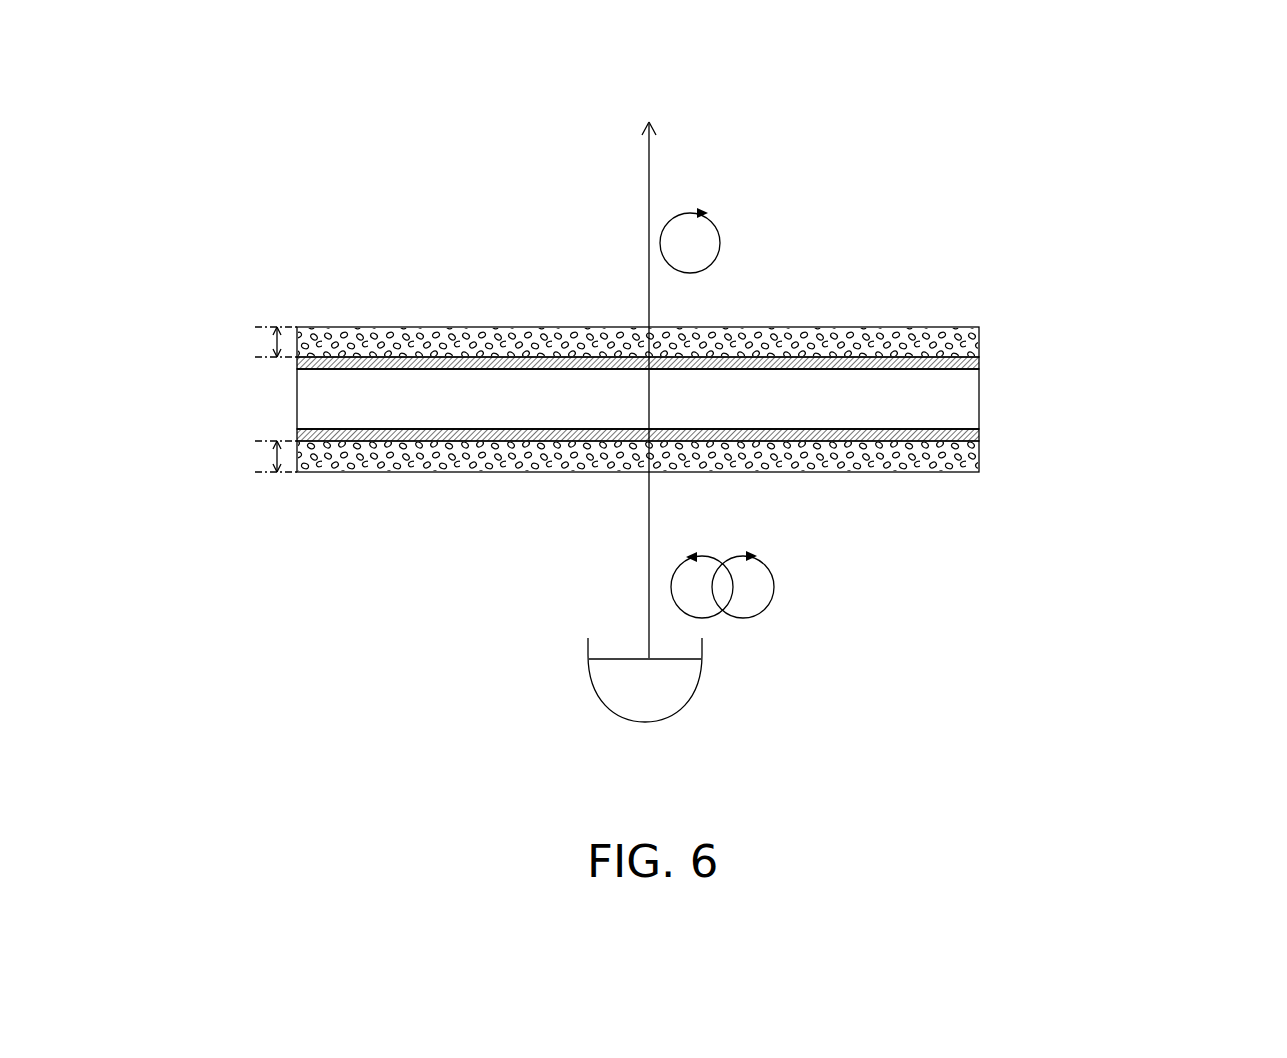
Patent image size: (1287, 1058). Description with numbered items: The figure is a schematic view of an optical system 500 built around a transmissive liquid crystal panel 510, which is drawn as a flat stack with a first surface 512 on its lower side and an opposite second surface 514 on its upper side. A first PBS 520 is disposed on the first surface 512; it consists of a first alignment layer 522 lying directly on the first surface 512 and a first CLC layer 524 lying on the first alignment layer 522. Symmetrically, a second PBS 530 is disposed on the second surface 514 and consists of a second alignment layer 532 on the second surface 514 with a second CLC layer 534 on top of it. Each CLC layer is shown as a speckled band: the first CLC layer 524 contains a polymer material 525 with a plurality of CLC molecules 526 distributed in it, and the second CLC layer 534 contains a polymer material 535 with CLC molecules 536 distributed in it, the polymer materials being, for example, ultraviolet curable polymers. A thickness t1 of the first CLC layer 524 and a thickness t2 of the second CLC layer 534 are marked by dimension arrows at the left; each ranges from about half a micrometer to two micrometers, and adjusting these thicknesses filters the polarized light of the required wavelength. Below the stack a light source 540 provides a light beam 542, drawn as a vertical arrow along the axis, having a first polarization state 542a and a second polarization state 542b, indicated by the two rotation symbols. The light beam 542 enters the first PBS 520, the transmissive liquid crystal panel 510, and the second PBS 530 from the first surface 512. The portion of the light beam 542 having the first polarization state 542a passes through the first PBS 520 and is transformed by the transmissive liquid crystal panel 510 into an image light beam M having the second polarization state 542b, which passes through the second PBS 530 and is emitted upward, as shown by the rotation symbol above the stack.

The optical system 500 is at (662, 454).
The transmissive liquid crystal panel 510 is at (960, 398).
The first surface 512 is at (320, 419).
The second surface 514 is at (368, 373).
The first PBS 520 is at (754, 492).
The first alignment layer 522 is at (970, 436).
The first CLC layer 524 is at (713, 498).
The polymer material 525 is at (975, 455).
The CLC molecules 526 is at (930, 462).
The second PBS 530 is at (754, 293).
The second alignment layer 532 is at (968, 365).
The second CLC layer 534 is at (713, 287).
The polymer material 535 is at (968, 350).
The CLC molecules 536 is at (947, 333).
The light source 540 is at (620, 690).
The light beam 542 is at (648, 548).
The first polarization state 542a is at (692, 557).
The second polarization state 542b is at (701, 210).
The thickness of the first CLC layer t1 is at (271, 458).
The thickness of the second CLC layer t2 is at (273, 343).
The image light beam M is at (648, 213).